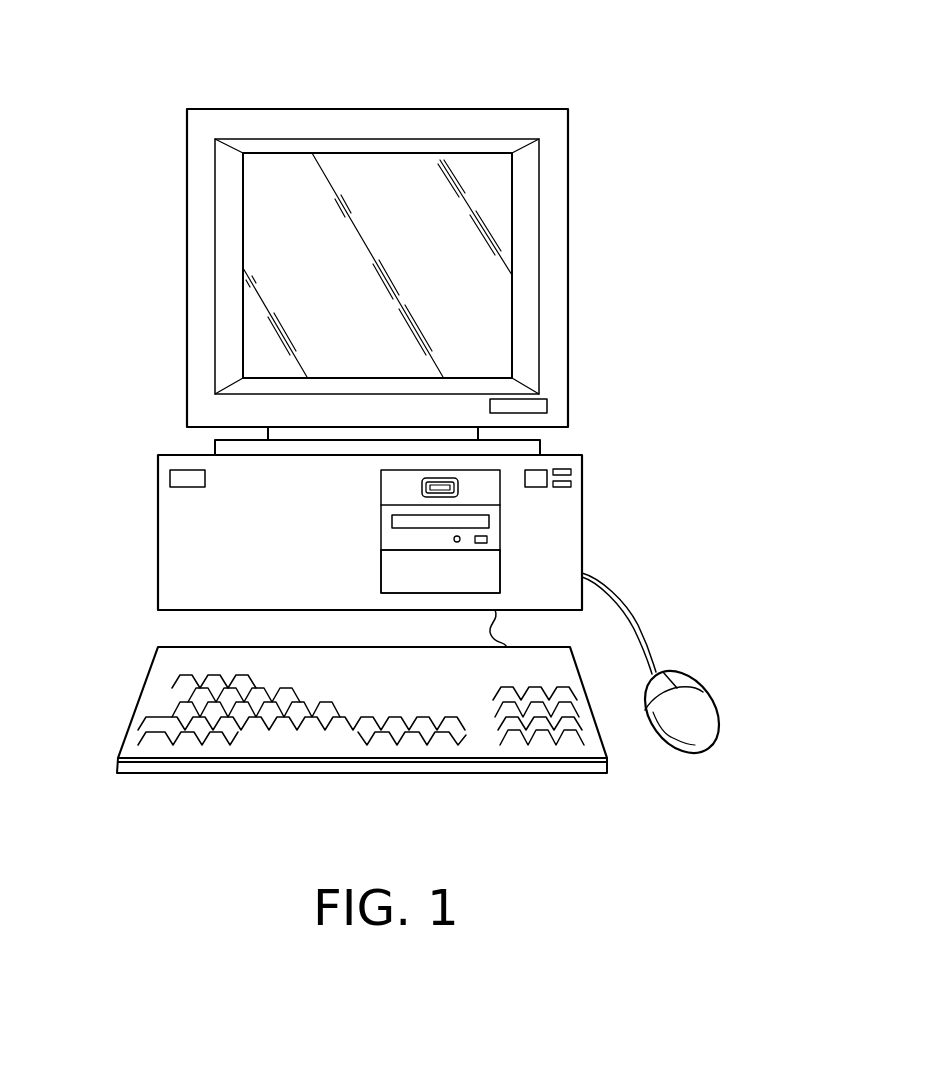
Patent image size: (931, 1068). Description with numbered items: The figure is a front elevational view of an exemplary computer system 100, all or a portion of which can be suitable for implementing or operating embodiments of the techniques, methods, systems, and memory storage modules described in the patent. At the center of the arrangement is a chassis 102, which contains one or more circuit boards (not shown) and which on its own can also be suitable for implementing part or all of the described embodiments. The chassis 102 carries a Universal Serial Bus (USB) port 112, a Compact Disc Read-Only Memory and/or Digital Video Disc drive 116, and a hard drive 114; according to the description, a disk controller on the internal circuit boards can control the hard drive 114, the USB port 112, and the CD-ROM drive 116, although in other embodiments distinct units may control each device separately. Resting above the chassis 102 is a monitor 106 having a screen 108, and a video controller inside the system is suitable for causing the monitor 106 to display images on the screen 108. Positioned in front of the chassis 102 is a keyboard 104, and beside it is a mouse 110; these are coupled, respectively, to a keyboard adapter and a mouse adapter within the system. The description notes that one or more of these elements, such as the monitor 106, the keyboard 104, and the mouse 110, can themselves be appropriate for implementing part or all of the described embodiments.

The computer system 100 is at (560, 86).
The chassis 102 is at (158, 537).
The keyboard 104 is at (141, 692).
The monitor 106 is at (263, 109).
The screen 108 is at (293, 272).
The mouse 110 is at (700, 703).
The Universal Serial Bus (USB) port 112 is at (459, 485).
The hard drive 114 is at (493, 569).
The CD-ROM and/or DVD drive 116 is at (490, 529).